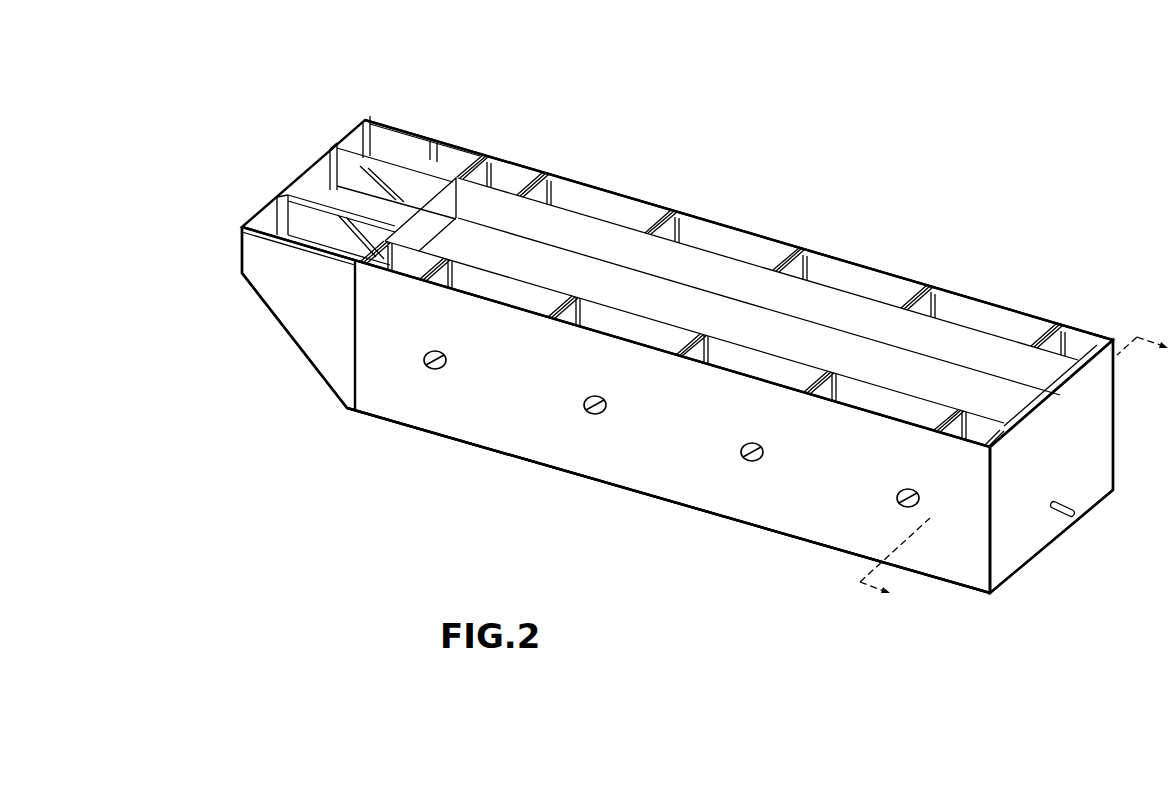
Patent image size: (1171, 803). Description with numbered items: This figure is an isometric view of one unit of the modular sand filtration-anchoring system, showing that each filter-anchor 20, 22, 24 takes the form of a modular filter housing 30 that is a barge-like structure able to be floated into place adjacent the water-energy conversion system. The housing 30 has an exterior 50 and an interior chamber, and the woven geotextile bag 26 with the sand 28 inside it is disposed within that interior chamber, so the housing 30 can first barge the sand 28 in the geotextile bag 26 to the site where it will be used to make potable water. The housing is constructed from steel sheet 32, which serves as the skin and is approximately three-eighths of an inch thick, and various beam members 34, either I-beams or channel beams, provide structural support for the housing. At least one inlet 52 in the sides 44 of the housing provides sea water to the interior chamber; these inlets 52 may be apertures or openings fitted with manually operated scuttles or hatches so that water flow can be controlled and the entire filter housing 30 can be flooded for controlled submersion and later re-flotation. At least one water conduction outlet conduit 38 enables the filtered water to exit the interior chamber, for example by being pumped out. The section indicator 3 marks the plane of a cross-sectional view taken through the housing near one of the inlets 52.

The filter-anchor 20 is at (677, 341).
The filter-anchor 22 is at (677, 341).
The filter-anchor 24 is at (791, 148).
The woven geotextile bag 26 is at (700, 296).
The sand 28 is at (586, 290).
The modular filter housing 30 is at (631, 201).
The steel sheet 32 is at (508, 318).
The beam members 34 is at (1010, 578).
The water conduction outlet conduit 38 is at (1073, 512).
The sides of the housing 44 is at (732, 505).
The exterior 50 is at (610, 467).
The inlet 52 is at (429, 371).
The section line 3- 3 is at (1014, 465).